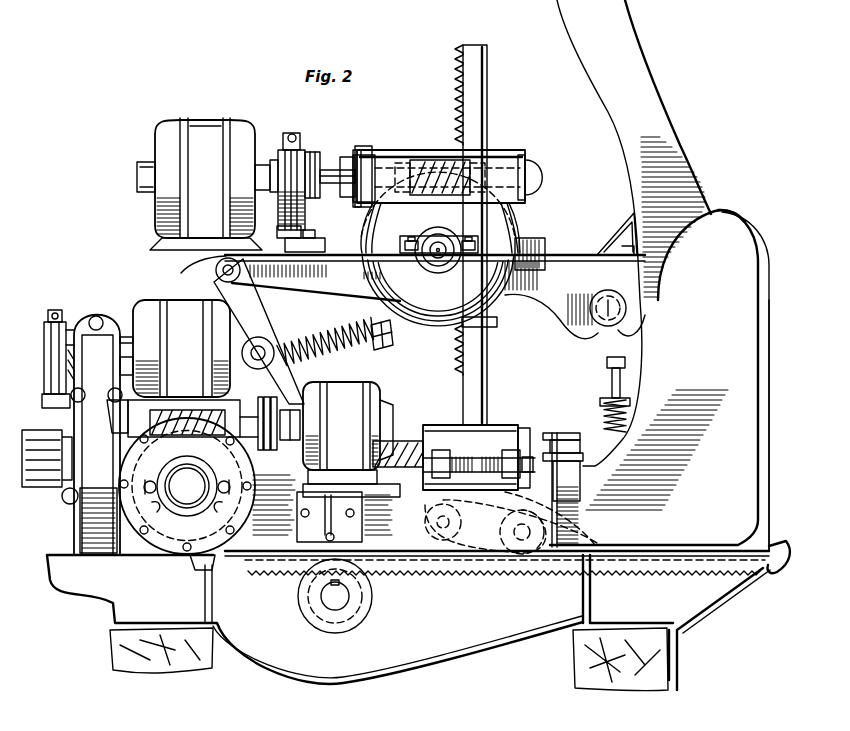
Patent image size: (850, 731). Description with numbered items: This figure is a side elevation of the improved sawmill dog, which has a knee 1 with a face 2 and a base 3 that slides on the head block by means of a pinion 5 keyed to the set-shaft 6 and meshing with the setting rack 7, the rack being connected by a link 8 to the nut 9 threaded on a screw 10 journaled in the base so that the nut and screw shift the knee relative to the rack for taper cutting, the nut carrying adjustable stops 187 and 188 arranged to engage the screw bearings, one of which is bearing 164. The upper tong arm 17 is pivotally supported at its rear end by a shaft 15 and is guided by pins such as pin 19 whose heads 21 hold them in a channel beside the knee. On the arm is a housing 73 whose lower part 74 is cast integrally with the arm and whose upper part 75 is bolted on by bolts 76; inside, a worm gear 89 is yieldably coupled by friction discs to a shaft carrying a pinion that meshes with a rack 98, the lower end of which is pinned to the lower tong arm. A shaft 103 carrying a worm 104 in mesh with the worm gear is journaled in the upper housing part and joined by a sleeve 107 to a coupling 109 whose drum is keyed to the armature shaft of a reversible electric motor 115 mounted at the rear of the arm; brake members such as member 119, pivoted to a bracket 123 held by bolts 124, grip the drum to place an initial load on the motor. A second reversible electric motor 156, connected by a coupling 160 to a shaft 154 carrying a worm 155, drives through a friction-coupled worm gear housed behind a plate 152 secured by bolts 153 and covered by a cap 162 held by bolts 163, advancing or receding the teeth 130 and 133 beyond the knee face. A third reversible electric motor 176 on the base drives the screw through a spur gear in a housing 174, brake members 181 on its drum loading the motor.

The knee 1 is at (742, 248).
The face 2 is at (772, 385).
The base 3 is at (410, 560).
The pinion 5 is at (315, 620).
The set-shaft 6 is at (322, 596).
The setting rack 7 is at (450, 576).
The link 8 is at (500, 510).
The nut 9 is at (510, 425).
The screw 10 is at (405, 441).
The shaft 15 is at (221, 268).
The upper tong arm 17 is at (348, 287).
The pin 19 is at (604, 322).
The head 21 is at (598, 294).
The housing 73 is at (520, 222).
The lower part of housing 74 is at (438, 318).
The upper part of housing 75 is at (400, 150).
The bolts 76 is at (470, 240).
The worm gear 89 is at (498, 318).
The rack 98 is at (488, 362).
The shaft 103 is at (378, 152).
The worm 104 is at (440, 160).
The sleeve 107 is at (340, 184).
The coupling 109 is at (318, 150).
The electric motor 115 is at (195, 130).
The brake member 119 is at (298, 130).
The bracket 123 is at (286, 243).
The bolts 124 is at (318, 238).
The teeth 130 is at (772, 298).
The teeth 133 is at (780, 543).
The plate 152 is at (198, 565).
The bolts 153 is at (125, 470).
The shaft 154 is at (275, 397).
The worm 155 is at (185, 410).
The reversible electric motor 156 is at (352, 390).
The coupling 160 is at (298, 408).
The cap 162 is at (187, 478).
The bolts 163 is at (226, 494).
The bearing 164 is at (572, 433).
The housing 174 is at (88, 515).
The reversible electric motor 176 is at (172, 300).
The brake members 181 is at (48, 345).
The adjustable stops 187 is at (458, 450).
The adjustable stops 188 is at (496, 450).